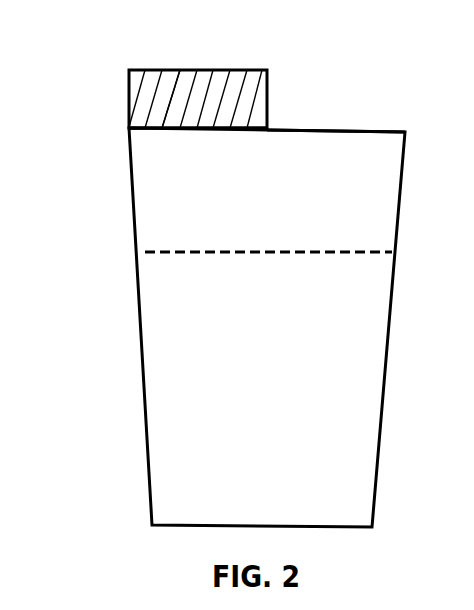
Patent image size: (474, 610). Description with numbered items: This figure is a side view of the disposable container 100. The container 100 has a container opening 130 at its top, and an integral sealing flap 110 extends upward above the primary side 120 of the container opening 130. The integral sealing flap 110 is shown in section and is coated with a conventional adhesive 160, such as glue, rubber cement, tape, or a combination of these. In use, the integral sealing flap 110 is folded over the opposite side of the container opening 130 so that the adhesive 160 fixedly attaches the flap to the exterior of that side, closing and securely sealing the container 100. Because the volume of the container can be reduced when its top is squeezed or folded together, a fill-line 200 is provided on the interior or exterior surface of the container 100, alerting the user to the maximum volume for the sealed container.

The disposable container 100 is at (386, 385).
The integral sealing flap 110 is at (268, 90).
The primary side 120 is at (177, 130).
The container opening 130 is at (332, 116).
The adhesive 160 is at (178, 95).
The fill-line 200 is at (213, 255).